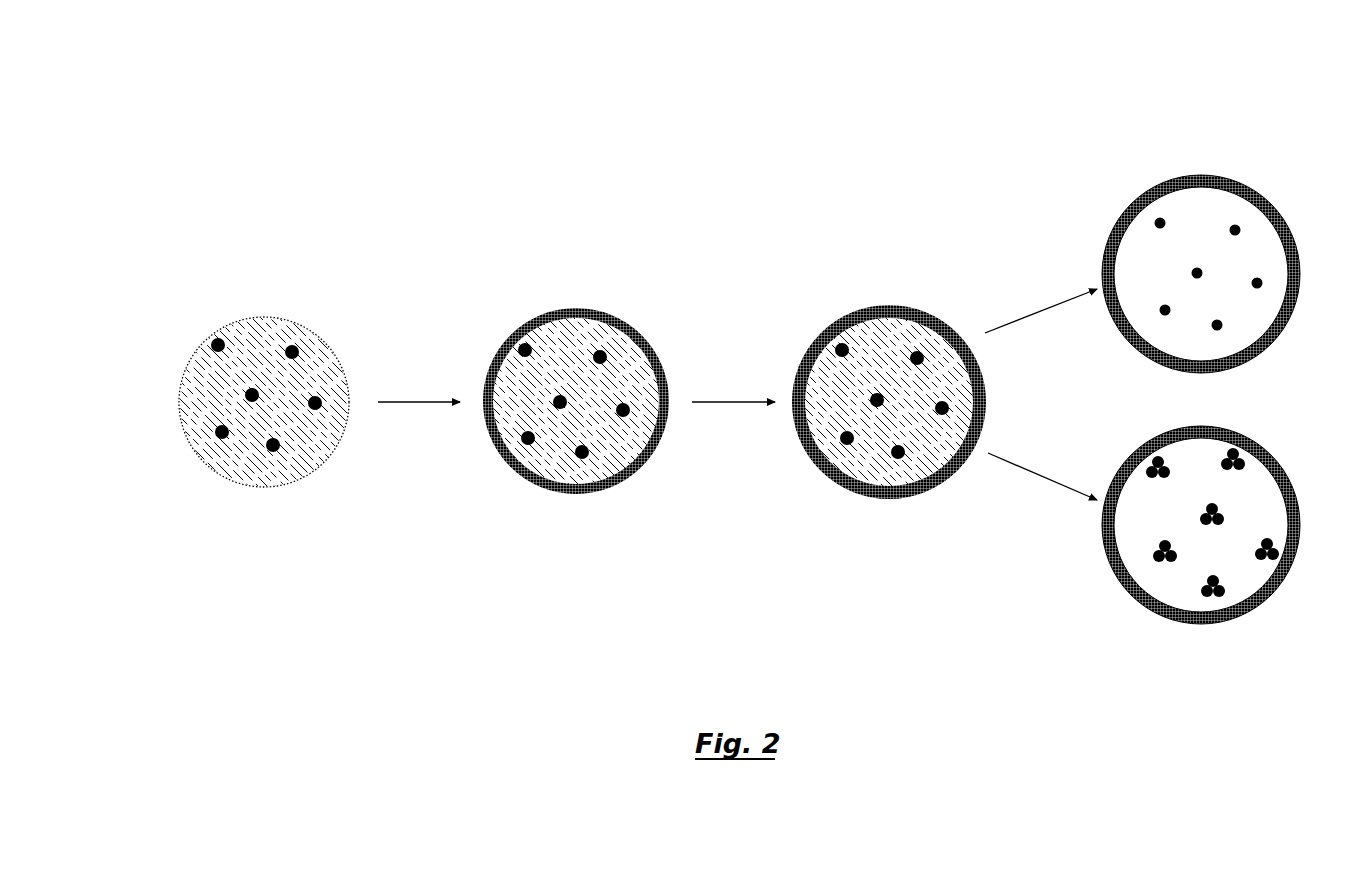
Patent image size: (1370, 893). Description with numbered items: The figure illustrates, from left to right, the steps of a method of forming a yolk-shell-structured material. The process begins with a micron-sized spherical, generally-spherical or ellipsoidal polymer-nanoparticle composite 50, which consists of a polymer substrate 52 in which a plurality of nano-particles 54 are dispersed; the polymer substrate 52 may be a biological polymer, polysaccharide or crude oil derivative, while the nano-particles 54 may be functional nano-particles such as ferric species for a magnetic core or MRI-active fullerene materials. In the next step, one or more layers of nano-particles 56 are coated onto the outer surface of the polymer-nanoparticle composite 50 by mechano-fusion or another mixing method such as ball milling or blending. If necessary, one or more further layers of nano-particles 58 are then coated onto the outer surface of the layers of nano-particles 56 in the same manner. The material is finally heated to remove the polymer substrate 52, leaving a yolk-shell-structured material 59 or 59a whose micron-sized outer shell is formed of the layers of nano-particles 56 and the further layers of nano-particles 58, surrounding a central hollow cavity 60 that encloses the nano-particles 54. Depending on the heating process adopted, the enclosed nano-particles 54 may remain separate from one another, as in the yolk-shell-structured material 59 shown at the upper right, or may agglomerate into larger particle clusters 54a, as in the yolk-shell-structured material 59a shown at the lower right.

The polymer-nanoparticle composite 50 is at (263, 455).
The polymer substrate 52 is at (253, 347).
The nano-particles 54 is at (212, 338).
The particle clusters 54a is at (1202, 582).
The layers of nano-particles 56 is at (577, 490).
The further layers of nano-particles 58 is at (888, 498).
The yolk-shell-structured material 59 is at (1218, 148).
The yolk-shell-structured material 59a is at (1135, 647).
The central hollow cavity 60 is at (1242, 300).